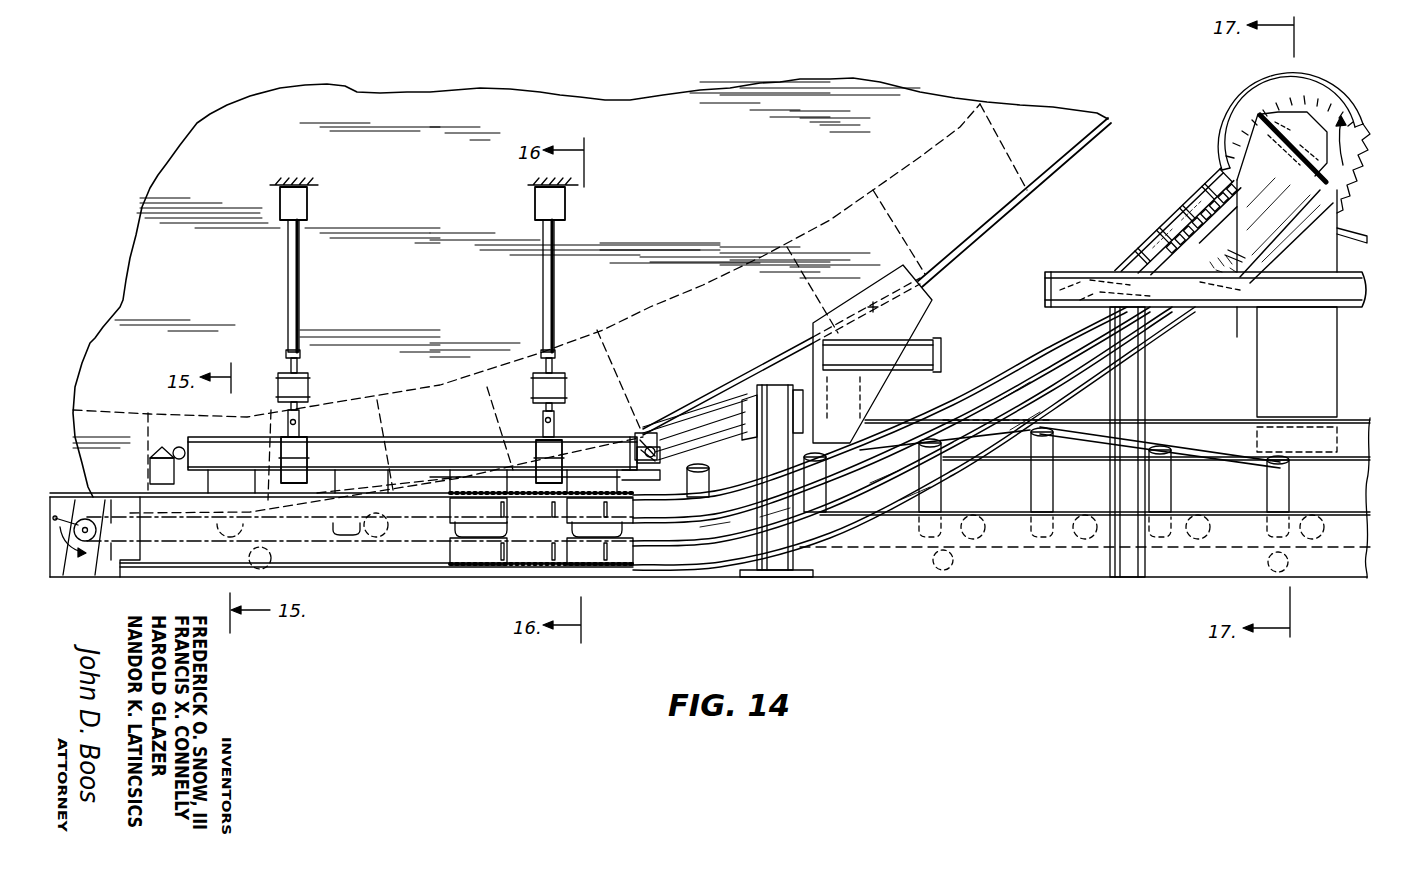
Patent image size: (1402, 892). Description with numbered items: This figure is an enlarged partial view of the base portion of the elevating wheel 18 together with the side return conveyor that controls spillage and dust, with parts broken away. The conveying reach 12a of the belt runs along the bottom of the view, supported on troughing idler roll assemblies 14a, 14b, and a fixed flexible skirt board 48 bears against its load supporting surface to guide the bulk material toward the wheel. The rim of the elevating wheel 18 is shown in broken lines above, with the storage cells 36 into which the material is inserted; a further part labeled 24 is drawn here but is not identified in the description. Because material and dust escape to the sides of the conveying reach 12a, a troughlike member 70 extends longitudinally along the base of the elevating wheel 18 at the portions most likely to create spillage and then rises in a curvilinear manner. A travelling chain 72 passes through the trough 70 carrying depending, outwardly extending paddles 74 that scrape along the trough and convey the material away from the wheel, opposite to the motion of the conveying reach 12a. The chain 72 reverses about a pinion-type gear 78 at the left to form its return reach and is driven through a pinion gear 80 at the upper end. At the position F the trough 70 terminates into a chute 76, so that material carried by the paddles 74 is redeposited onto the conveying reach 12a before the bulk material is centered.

The elevating wheel 18 is at (792, 98).
The storage cell 36 is at (943, 182).
The conveyor belt 24 is at (813, 273).
The pinion gear 80 is at (1320, 114).
The pinion-type gear 78 is at (92, 497).
The paddles or vanes 74 is at (497, 503).
The travelling chain 72 is at (530, 543).
The troughlike member 70 is at (1155, 327).
The troughing idler roll assembly 14b is at (1050, 487).
The troughing idler roll assembly 14a is at (1283, 493).
The conveying reach 12a is at (1188, 457).
The fixed flexible skirt board 48 is at (1233, 433).
The chute 76 is at (1330, 343).
The position F is at (1240, 256).